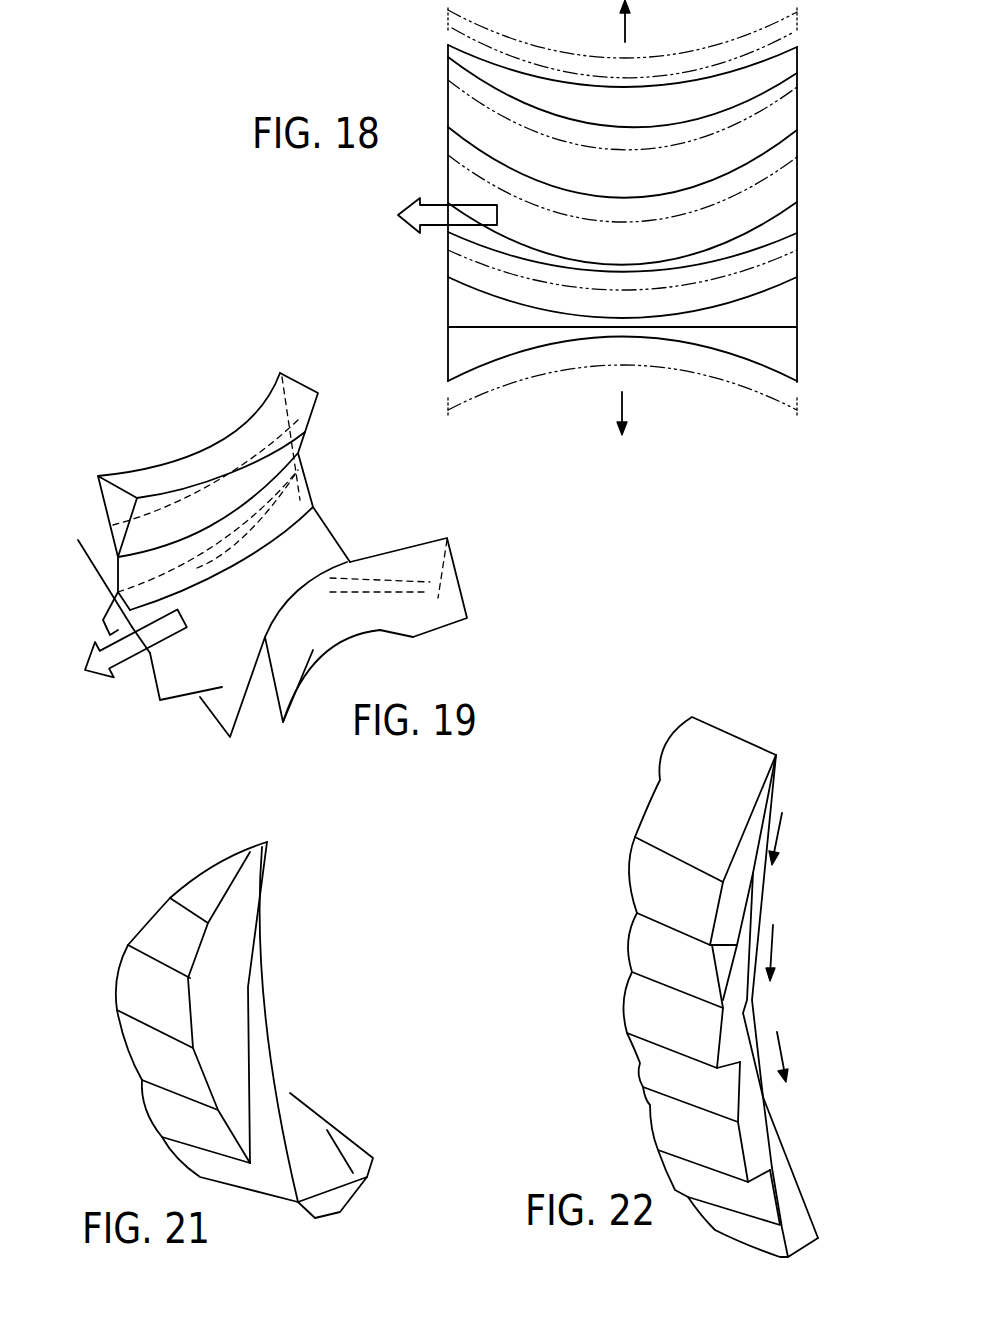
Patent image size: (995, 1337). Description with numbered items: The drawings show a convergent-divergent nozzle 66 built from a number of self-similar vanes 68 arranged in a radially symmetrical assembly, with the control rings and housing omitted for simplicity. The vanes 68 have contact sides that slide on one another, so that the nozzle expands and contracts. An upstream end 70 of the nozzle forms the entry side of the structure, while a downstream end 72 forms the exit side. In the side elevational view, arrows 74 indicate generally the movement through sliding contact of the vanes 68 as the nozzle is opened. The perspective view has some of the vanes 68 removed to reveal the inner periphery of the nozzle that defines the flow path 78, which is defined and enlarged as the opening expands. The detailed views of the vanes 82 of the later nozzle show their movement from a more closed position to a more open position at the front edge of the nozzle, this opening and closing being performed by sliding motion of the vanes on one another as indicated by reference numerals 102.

In FIG. 18, the convergent-divergent nozzle 66 is at (819, 246).
In FIG. 19, the convergent-divergent nozzle 66 is at (402, 517).
In FIG. 18, the vanes 68 is at (798, 73).
In FIG. 19, the vanes 68 is at (113, 493).
In FIG. 18, the upstream end 70 is at (798, 183).
In FIG. 19, the upstream end 70 is at (307, 477).
In FIG. 18, the downstream end 72 is at (447, 297).
In FIG. 19, the downstream end 72 is at (180, 700).
In FIG. 18, the arrows 74 is at (627, 25).
In FIG. 18, the flow path 78 is at (418, 202).
In FIG. 19, the flow path 78 is at (102, 687).
In FIG. 21, the stacked laminate plies 82 is at (257, 1015).
In FIG. 22, the stacked laminate plies 82 is at (645, 1085).
In FIG. 22, the reference numerals indicating sliding motion 102 is at (782, 833).